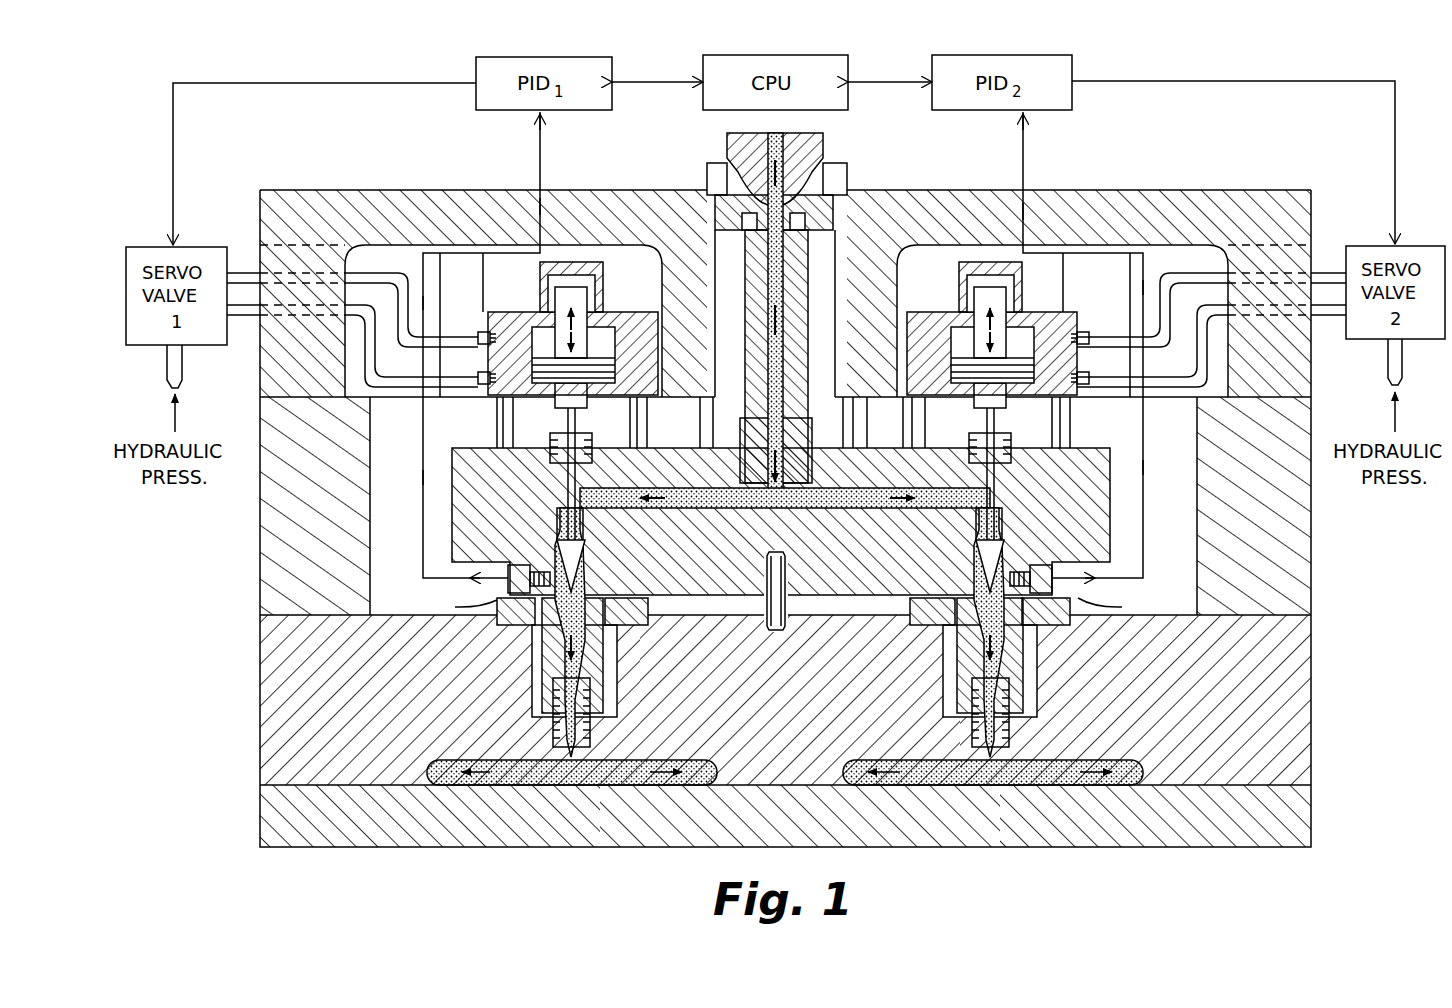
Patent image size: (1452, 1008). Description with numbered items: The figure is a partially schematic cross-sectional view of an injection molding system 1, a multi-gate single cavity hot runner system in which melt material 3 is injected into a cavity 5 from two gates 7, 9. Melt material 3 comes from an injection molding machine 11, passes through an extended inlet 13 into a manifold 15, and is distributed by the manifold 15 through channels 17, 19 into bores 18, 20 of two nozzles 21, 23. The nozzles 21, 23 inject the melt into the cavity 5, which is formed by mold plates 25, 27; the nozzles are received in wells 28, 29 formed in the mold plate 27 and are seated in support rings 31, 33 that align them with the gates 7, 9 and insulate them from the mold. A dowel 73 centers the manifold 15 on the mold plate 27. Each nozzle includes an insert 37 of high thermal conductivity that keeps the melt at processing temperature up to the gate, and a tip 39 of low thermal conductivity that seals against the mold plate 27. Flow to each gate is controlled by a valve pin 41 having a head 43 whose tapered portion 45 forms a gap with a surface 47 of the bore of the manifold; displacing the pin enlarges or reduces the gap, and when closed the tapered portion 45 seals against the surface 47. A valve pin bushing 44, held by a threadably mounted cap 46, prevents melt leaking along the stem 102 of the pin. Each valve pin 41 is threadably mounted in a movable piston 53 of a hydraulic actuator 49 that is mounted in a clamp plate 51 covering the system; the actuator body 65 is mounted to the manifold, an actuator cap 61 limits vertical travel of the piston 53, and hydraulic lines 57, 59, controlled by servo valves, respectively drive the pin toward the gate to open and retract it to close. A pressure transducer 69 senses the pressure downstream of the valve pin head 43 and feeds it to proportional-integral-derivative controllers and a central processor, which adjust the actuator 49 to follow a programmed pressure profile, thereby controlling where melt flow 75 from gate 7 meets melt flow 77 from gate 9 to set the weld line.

The injection molding system 1 is at (1380, 838).
The melt material 3 is at (1110, 786).
The cavity 5 is at (762, 773).
The gate 7 is at (568, 750).
The gate 9 is at (980, 750).
The injection molding machine 11 is at (823, 138).
The extended inlet 13 is at (808, 280).
The manifold 15 is at (1112, 515).
The channel 17 is at (730, 513).
The bore 18 is at (607, 735).
The channel 19 is at (870, 508).
The bore 20 is at (1013, 662).
The nozzle 21 is at (537, 678).
The nozzle 23 is at (1030, 700).
The mold plate 25 is at (1226, 835).
The mold plate 27 is at (1295, 757).
The well 28 is at (552, 722).
The well 29 is at (1145, 762).
The support ring 31 is at (543, 640).
The support ring 33 is at (1000, 634).
The insert 37 is at (987, 762).
The tip 39 is at (1030, 748).
The valve pin 41 is at (1200, 480).
The head 43 is at (1002, 546).
The valve pin bushing 44 is at (1311, 399).
The tapered portion 45 is at (566, 542).
The cap 46 is at (1010, 420).
The surface 47 is at (548, 556).
The actuator 49 is at (508, 290).
The clamp plate 51 is at (1227, 197).
The piston 53 is at (545, 300).
The hydraulic line 57 is at (250, 270).
The hydraulic line 59 is at (247, 320).
The actuator cap 61 is at (613, 340).
The actuator body 65 is at (503, 327).
The pressure transducer 69 is at (508, 585).
The dowel 73 is at (768, 636).
The melt flow 75 is at (725, 774).
The melt flow 77 is at (853, 776).
The stem 102 is at (548, 432).